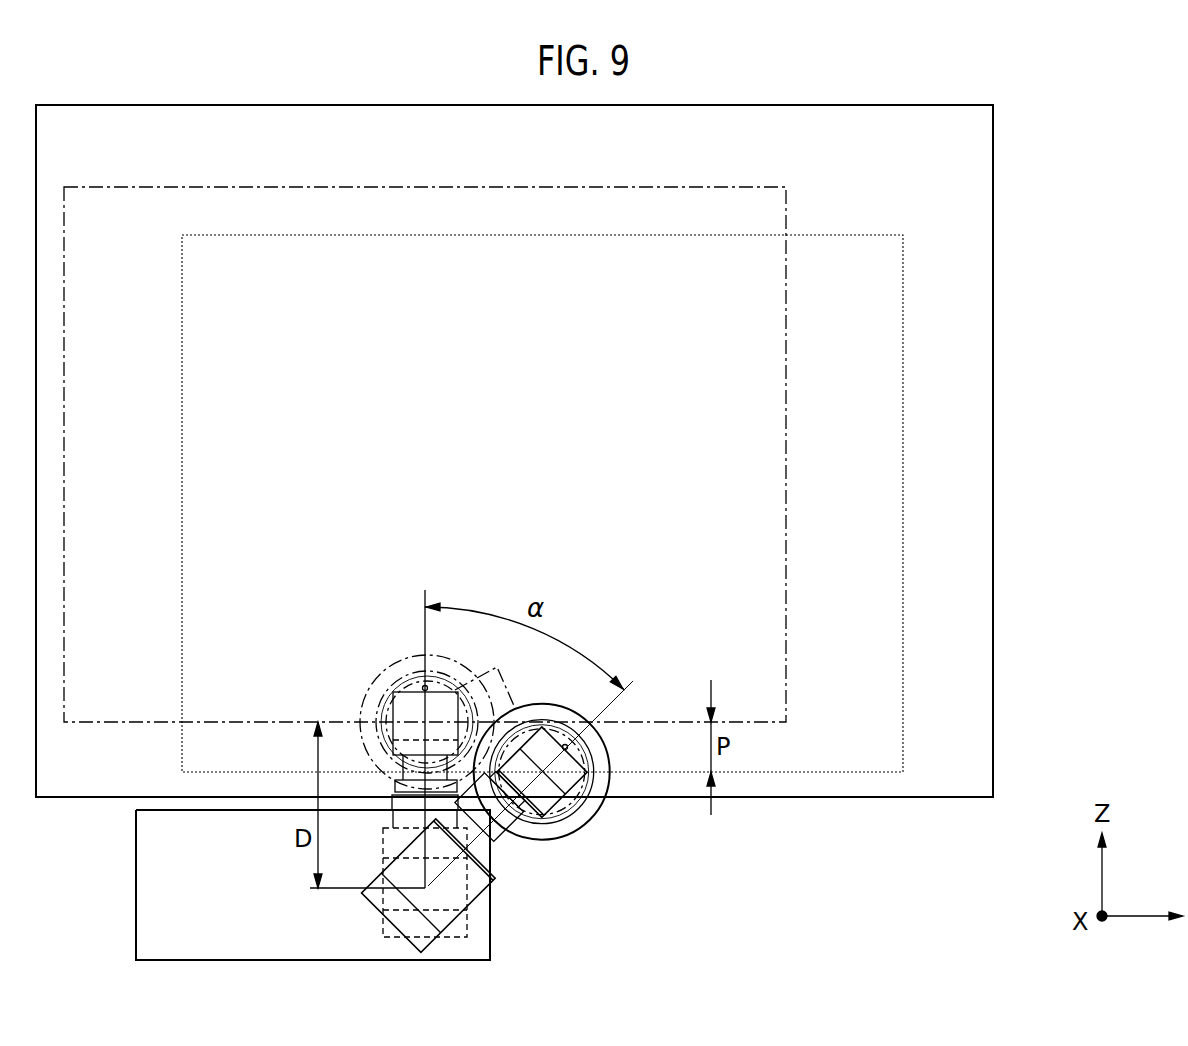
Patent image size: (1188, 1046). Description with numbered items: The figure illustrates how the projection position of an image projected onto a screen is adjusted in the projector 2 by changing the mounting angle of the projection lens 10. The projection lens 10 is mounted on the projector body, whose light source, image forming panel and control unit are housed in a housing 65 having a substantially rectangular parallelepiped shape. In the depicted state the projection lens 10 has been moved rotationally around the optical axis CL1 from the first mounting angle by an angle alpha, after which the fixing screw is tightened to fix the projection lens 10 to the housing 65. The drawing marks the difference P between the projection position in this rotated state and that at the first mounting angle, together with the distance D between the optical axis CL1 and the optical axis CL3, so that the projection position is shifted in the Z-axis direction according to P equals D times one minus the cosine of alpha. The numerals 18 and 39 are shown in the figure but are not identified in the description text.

The projector 2 is at (108, 916).
The projection lens 10 is at (636, 700).
The camera housing 18 is at (600, 814).
The display housing 39 is at (977, 180).
The housing 65 is at (167, 838).
The optical axis CL1 is at (440, 894).
The optical axis CL3 is at (436, 714).